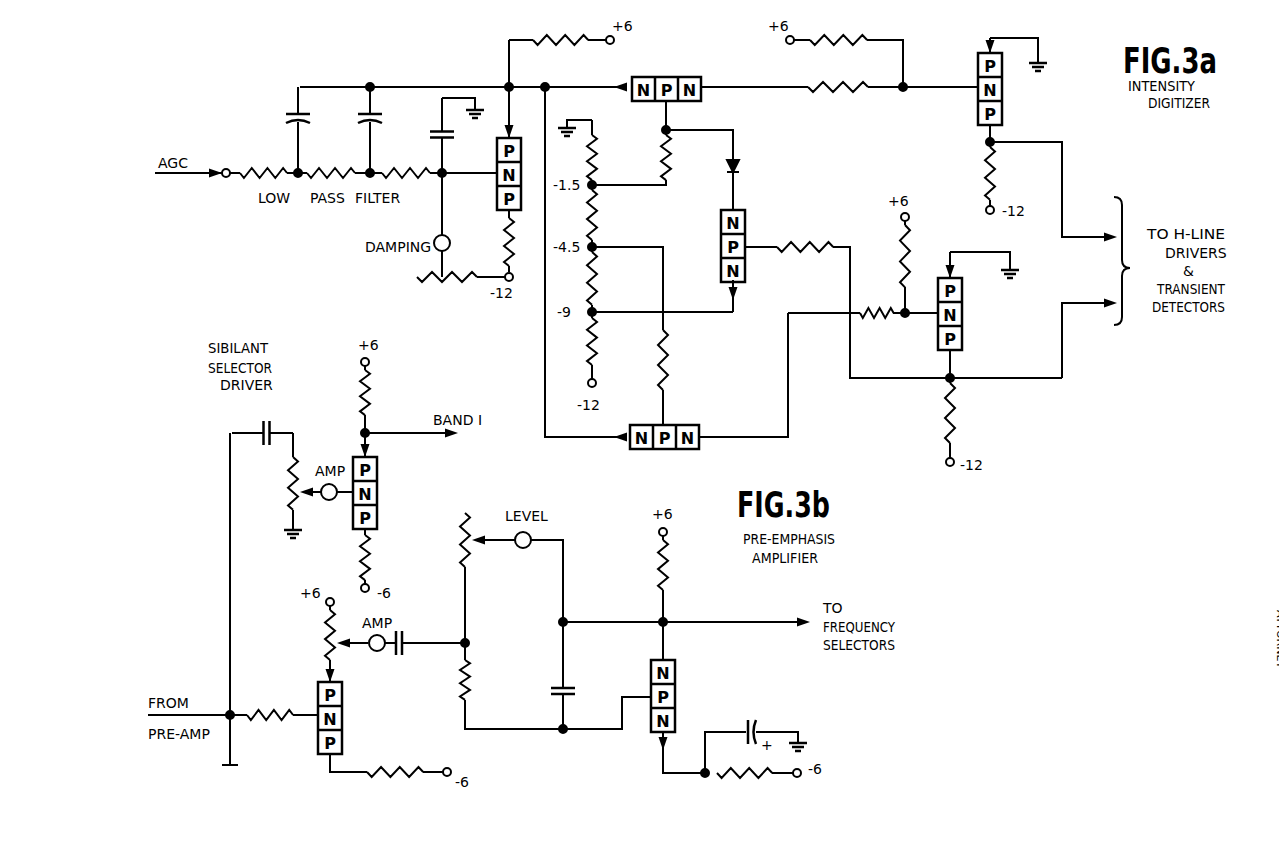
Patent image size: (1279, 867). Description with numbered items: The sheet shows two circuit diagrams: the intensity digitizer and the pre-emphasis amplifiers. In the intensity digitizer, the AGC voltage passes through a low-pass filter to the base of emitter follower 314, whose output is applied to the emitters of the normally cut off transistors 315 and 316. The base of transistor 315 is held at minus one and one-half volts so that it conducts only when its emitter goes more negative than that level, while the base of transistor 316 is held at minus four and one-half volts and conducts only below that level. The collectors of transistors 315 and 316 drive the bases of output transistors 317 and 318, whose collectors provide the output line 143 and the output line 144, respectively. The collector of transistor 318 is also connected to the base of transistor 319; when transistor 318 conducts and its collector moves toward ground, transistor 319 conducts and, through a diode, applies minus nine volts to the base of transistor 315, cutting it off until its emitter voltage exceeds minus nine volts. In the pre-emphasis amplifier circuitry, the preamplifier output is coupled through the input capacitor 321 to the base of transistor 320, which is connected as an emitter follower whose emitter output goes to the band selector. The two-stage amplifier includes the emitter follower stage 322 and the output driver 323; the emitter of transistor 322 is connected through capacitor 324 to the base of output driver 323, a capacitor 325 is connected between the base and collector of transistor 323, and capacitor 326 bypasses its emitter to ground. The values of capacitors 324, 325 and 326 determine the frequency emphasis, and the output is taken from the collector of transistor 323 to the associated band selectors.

In FIG. 3A, the emitter follower 314 is at (521, 146).
In FIG. 3A, the transistor 315 is at (668, 77).
In FIG. 3A, the transistor 316 is at (640, 450).
In FIG. 3A, the output transistor 317 is at (1004, 103).
In FIG. 3A, the output transistor 318 is at (963, 318).
In FIG. 3A, the transistor 319 is at (746, 231).
In FIG. 3A, the output line 143 is at (1096, 238).
In FIG. 3A, the output line 144 is at (1085, 306).
In FIG. 3B, the transistor 320 is at (377, 507).
In FIG. 3B, the input capacitor 321 is at (272, 426).
In FIG. 3B, the emitter follower stage 322 is at (343, 721).
In FIG. 3B, the output driver 323 is at (650, 691).
In FIG. 3B, the capacitor 324 is at (406, 639).
In FIG. 3B, the capacitor 325 is at (557, 688).
In FIG. 3B, the capacitor 326 is at (752, 723).